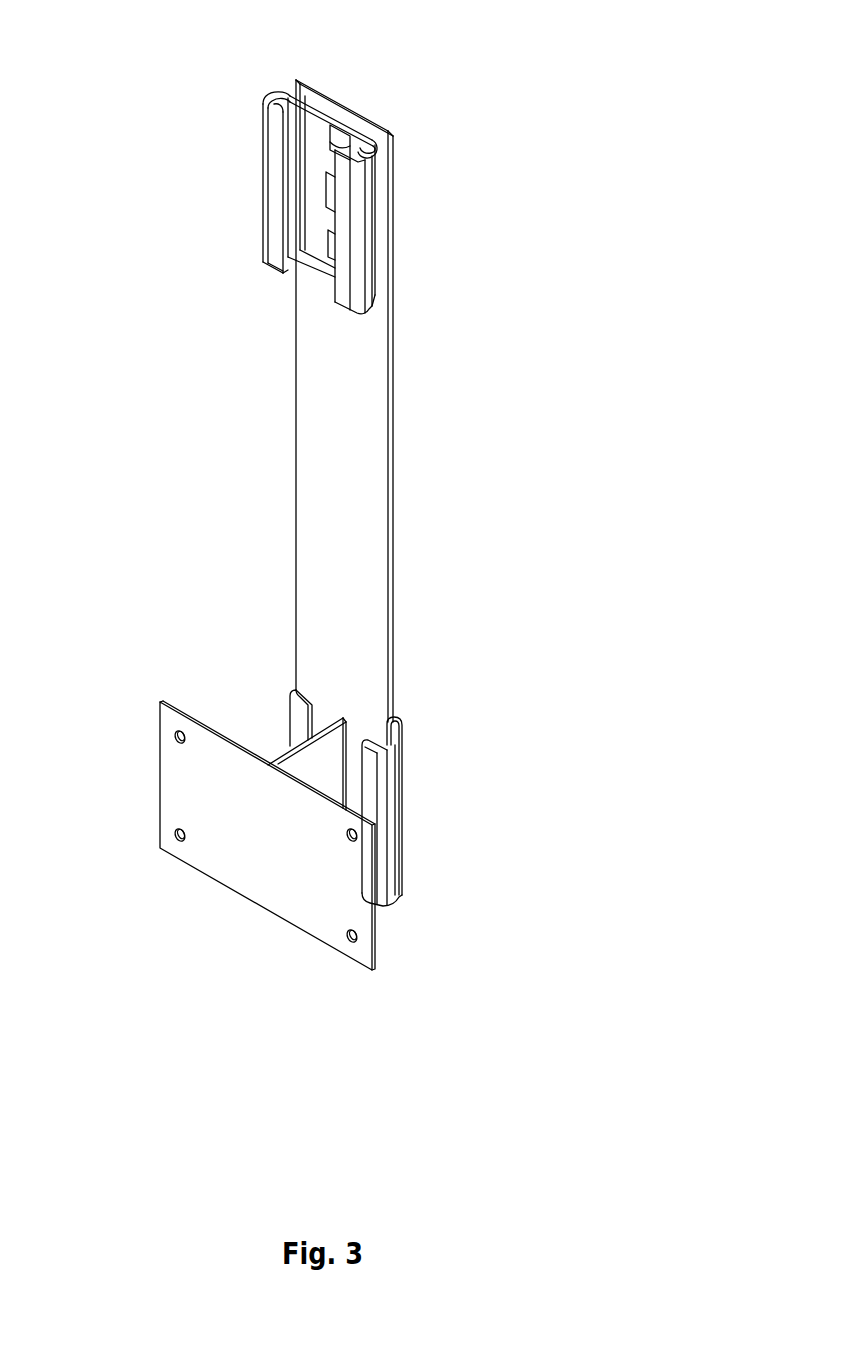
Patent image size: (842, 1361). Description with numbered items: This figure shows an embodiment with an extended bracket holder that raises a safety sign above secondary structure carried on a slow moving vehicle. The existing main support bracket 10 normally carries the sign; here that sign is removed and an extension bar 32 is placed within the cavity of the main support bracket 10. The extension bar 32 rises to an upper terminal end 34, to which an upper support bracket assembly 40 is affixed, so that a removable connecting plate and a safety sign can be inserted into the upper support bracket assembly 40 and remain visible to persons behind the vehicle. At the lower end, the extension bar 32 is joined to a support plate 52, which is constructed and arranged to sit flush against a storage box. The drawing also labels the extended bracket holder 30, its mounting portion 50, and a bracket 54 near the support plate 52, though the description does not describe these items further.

The main support bracket 10 is at (383, 770).
The hanger assembly 30 is at (215, 505).
The extension bar 32 is at (392, 512).
The upper terminal end 34 is at (367, 117).
The upper support bracket assembly 40 is at (243, 135).
The mounting assembly 50 is at (305, 953).
The support plate 52 is at (200, 875).
The bracket 54 is at (287, 743).